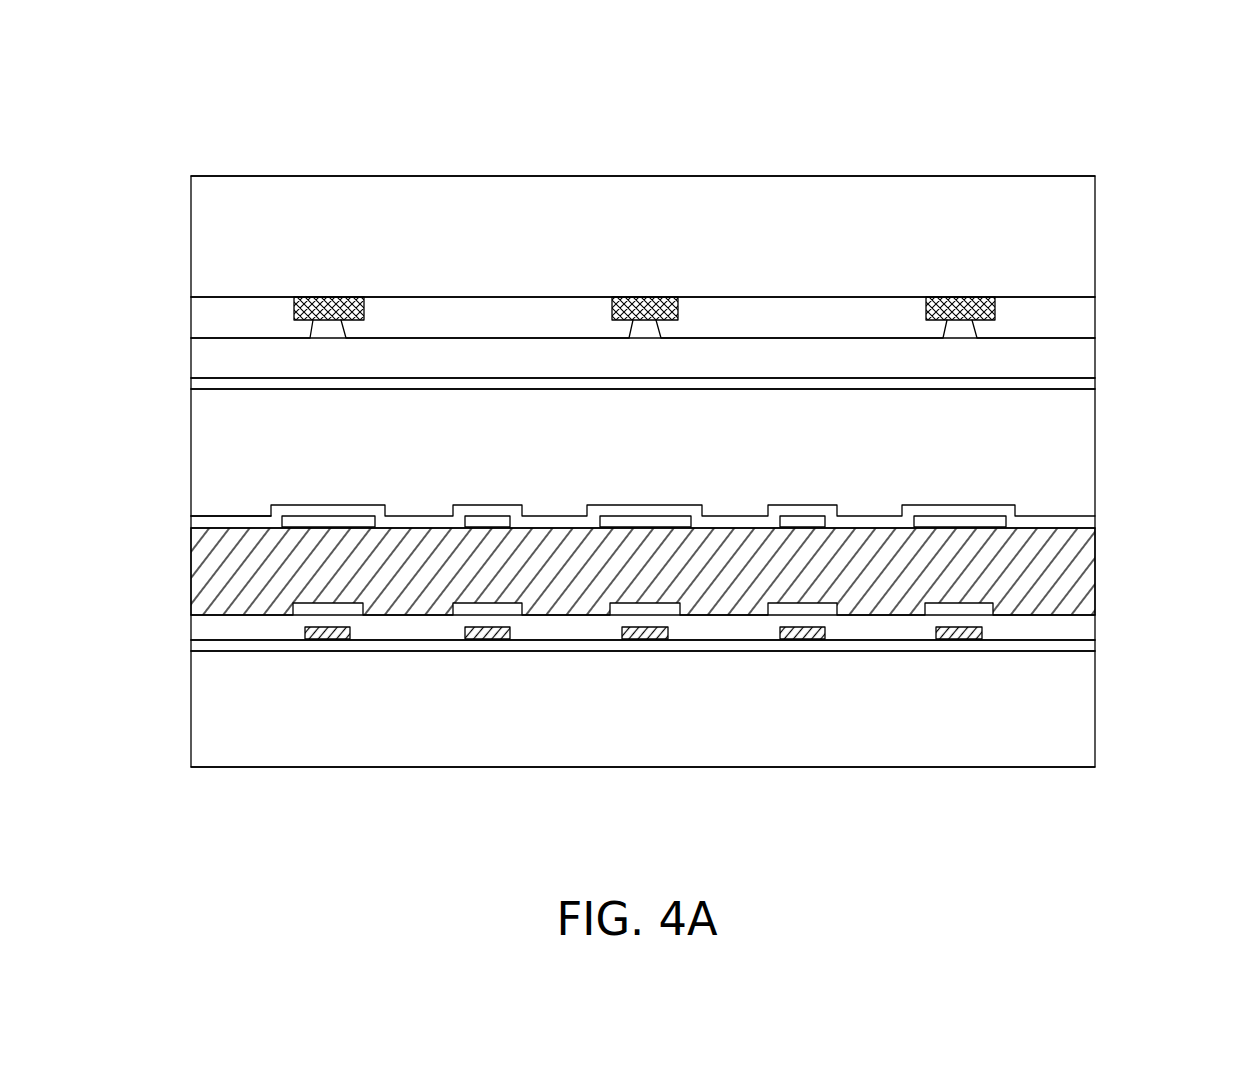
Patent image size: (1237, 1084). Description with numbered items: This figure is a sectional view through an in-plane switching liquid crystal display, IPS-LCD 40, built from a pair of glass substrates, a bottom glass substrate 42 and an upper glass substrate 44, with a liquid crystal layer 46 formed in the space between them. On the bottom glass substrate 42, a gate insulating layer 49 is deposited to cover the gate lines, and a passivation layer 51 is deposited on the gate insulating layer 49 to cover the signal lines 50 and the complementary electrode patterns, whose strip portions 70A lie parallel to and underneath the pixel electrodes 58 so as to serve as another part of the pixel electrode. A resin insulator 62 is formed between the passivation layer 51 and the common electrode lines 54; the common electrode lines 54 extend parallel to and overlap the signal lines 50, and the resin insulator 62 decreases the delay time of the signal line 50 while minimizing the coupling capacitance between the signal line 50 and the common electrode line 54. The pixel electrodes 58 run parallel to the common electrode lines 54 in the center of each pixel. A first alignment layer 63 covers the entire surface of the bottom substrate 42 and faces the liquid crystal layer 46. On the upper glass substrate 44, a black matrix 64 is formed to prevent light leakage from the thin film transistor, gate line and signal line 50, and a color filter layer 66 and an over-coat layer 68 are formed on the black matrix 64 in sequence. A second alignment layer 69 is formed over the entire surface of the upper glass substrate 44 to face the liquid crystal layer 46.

The IPS-LCD 40 is at (1120, 161).
The bottom glass substrate 42 is at (1067, 718).
The upper glass substrate 44 is at (1067, 238).
The liquid crystal layer 46 is at (1067, 455).
The gate insulating layer 49 is at (1072, 645).
The signal line 50 is at (323, 640).
The passivation layer 51 is at (1072, 627).
The common electrode line 54 is at (329, 522).
The pixel electrode 58 is at (487, 520).
The resin insulator 62 is at (1067, 582).
The first alignment layer 63 is at (1067, 522).
The black matrix 64 is at (318, 297).
The color filter layer 66 is at (1067, 318).
The over-coat layer 68 is at (1067, 353).
The second alignment layer 69 is at (1067, 383).
The strip portion 70A is at (481, 640).